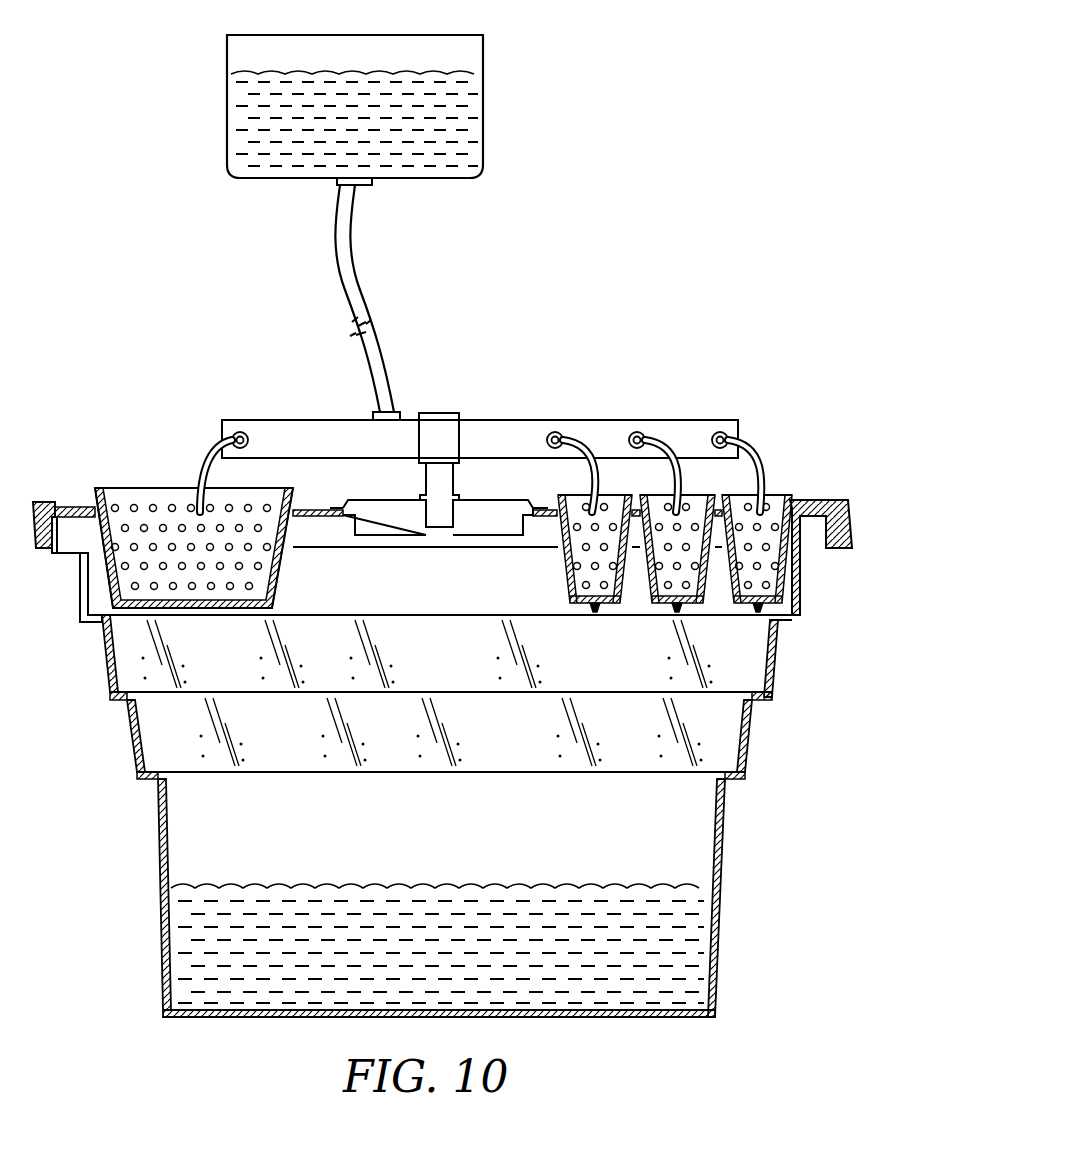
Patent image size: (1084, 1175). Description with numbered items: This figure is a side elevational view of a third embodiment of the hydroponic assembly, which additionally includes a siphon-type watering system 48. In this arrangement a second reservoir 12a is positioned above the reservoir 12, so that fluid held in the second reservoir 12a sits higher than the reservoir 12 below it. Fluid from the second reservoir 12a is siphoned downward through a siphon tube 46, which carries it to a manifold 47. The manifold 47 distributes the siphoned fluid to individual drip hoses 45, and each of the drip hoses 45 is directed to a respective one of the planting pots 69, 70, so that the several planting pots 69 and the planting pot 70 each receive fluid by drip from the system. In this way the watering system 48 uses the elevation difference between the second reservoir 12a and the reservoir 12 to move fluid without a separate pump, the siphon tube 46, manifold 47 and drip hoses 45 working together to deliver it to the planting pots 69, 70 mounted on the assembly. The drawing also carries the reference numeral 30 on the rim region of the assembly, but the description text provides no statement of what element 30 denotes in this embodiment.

The reservoir 12 is at (158, 936).
The second reservoir 12a is at (226, 60).
The lid rim 30 is at (41, 499).
The drip hoses 45 is at (196, 470).
The siphon tube 46 is at (350, 238).
The manifold 47 is at (289, 432).
The siphon-type watering system 48 is at (677, 191).
The planting pots 69 is at (580, 492).
The planting pot 70 is at (119, 489).